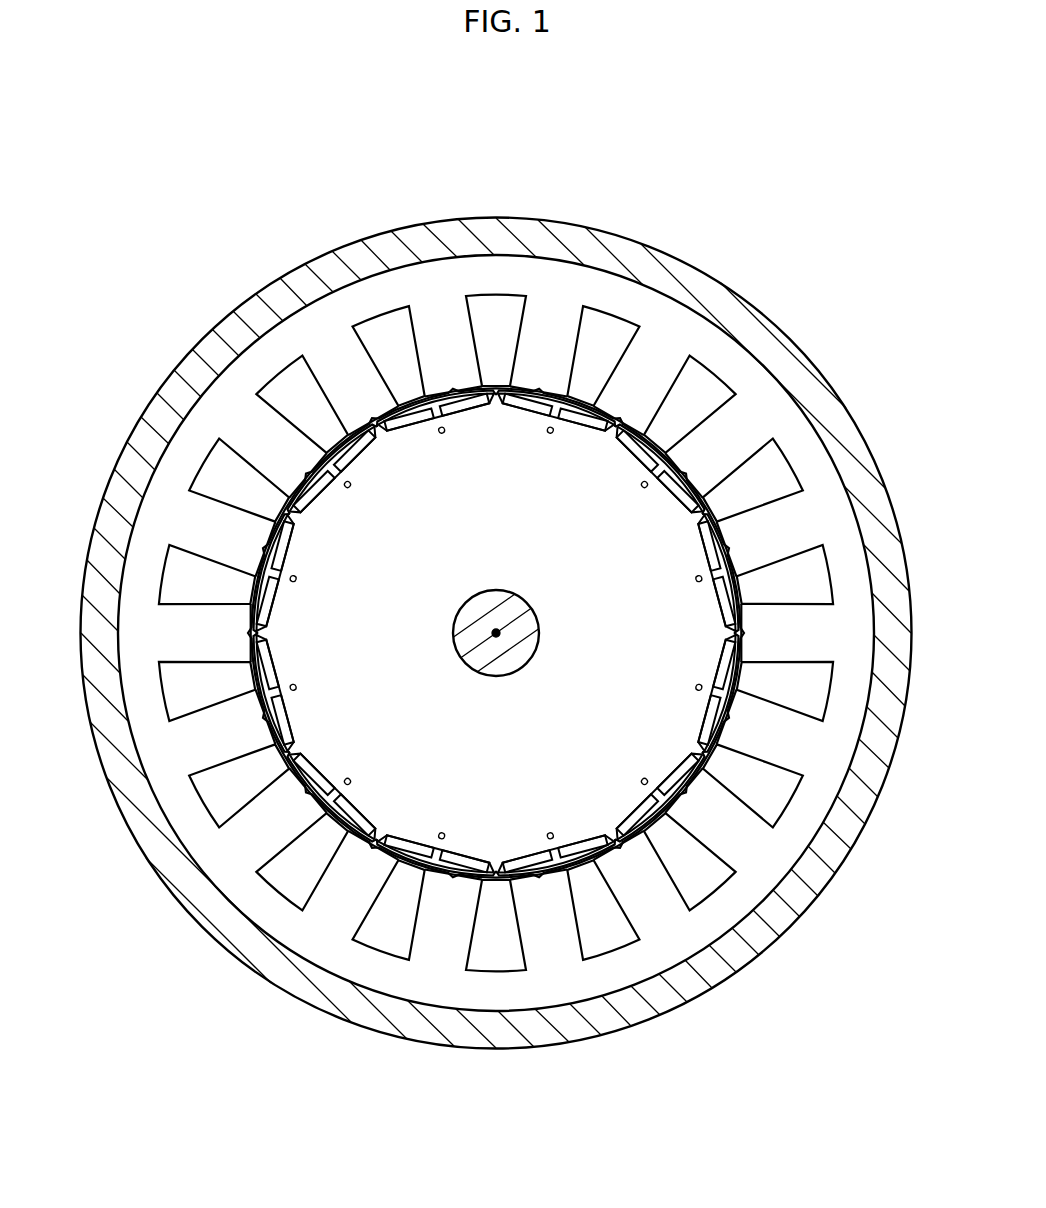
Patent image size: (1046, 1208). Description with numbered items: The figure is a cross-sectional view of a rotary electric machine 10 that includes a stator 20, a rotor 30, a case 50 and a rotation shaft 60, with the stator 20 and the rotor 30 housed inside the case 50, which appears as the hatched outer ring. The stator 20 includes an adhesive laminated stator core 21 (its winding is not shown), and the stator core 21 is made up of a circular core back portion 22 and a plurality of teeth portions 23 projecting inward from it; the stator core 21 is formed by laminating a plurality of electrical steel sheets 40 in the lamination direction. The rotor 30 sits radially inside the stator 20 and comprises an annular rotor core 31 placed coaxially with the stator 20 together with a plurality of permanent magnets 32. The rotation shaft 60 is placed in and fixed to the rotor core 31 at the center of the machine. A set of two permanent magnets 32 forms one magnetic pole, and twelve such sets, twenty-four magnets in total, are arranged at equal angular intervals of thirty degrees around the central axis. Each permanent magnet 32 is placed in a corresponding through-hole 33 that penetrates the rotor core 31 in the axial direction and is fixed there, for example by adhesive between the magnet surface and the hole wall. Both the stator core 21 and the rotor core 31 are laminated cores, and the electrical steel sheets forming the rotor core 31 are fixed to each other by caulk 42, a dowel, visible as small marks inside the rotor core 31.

The rotary electric machine 10 is at (797, 122).
The stator 20 is at (782, 378).
The stator core 21 is at (719, 177).
The core back portion 22 is at (689, 318).
The teeth portions 23 is at (638, 350).
The rotor 30 is at (440, 637).
The rotor core 31 is at (400, 820).
The permanent magnets 32 is at (532, 413).
The through-holes 33 is at (590, 847).
The electrical steel sheets 40 is at (274, 343).
The caulk 42 is at (353, 481).
The case 50 is at (821, 422).
The rotation shaft 60 is at (527, 648).